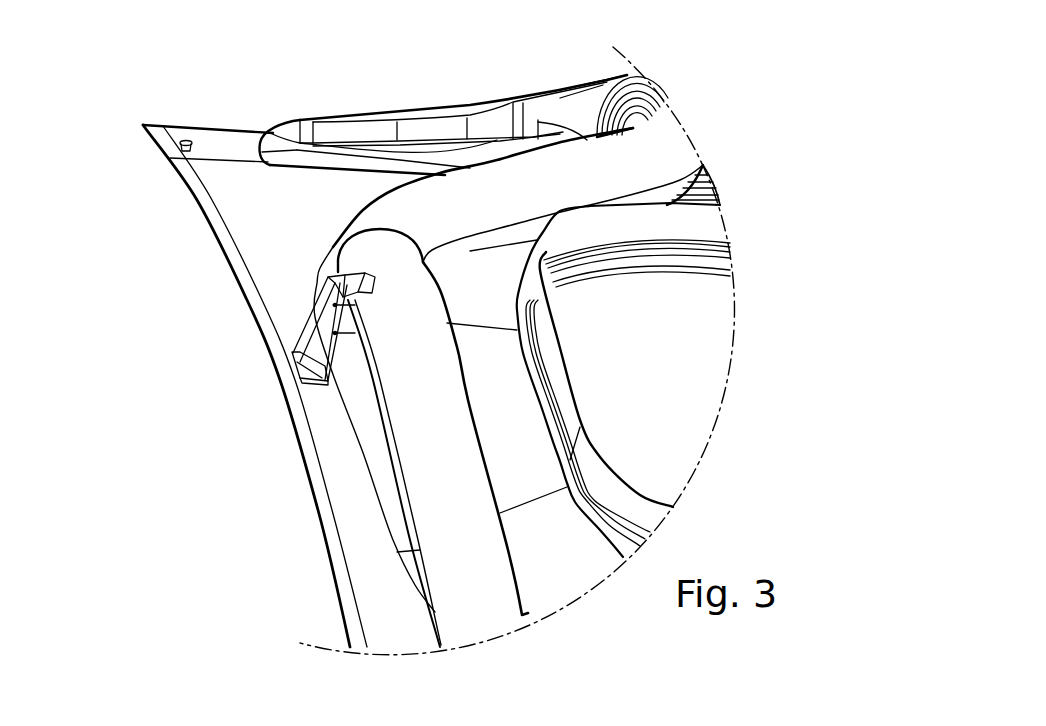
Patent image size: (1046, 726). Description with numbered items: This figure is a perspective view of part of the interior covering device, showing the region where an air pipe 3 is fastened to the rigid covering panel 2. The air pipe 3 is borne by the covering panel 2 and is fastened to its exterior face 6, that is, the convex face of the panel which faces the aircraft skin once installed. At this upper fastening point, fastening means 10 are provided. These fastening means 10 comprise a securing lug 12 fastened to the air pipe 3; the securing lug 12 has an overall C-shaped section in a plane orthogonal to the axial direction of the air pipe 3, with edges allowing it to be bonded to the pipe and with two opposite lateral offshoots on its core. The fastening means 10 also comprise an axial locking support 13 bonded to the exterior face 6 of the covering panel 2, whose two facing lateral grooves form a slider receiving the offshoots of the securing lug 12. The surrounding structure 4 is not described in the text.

The covering panel 2 is at (247, 222).
The air pipe 3 is at (423, 503).
The window frame 4 is at (697, 405).
The exterior face 6 is at (342, 461).
The fastening means 10 is at (295, 331).
The securing lug 12 is at (350, 300).
The axial locking support 13 is at (305, 372).